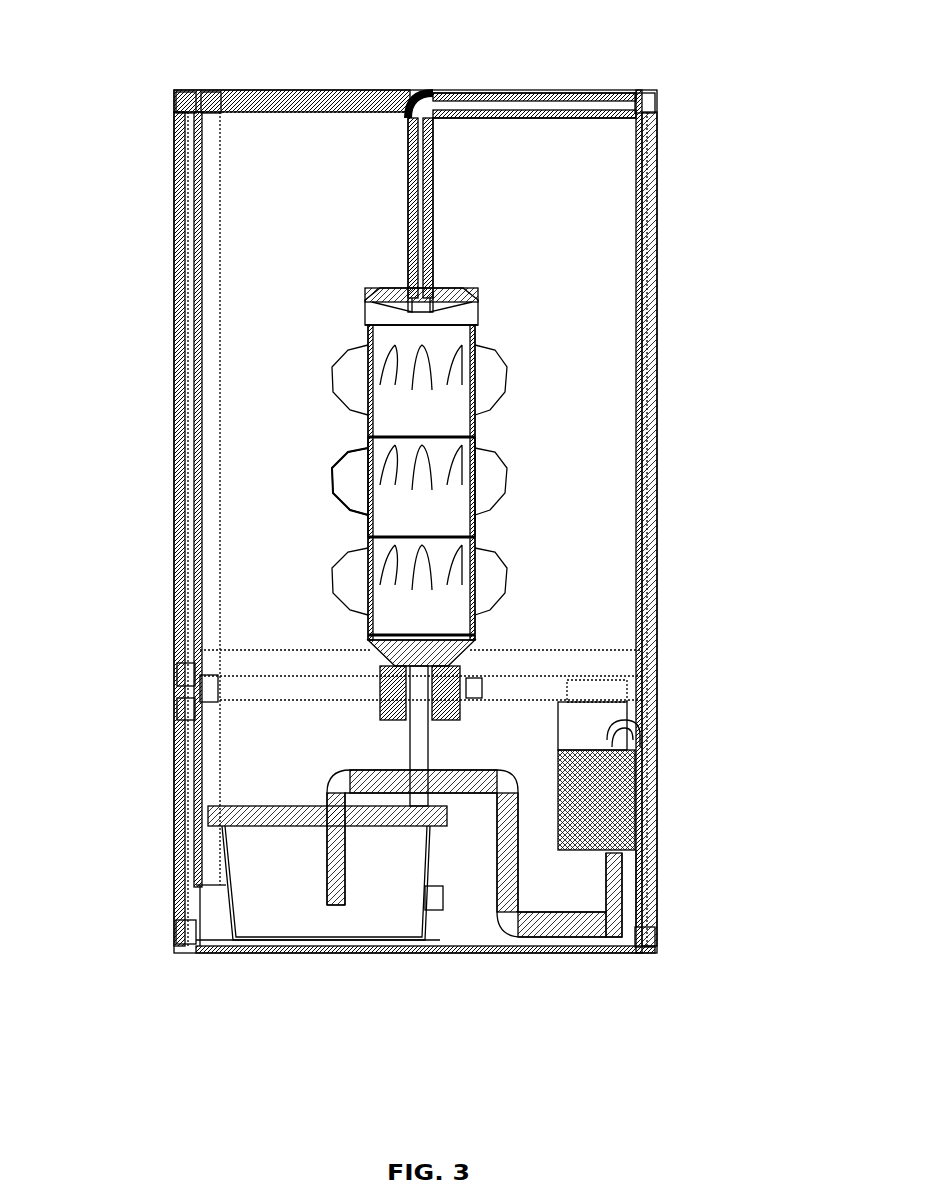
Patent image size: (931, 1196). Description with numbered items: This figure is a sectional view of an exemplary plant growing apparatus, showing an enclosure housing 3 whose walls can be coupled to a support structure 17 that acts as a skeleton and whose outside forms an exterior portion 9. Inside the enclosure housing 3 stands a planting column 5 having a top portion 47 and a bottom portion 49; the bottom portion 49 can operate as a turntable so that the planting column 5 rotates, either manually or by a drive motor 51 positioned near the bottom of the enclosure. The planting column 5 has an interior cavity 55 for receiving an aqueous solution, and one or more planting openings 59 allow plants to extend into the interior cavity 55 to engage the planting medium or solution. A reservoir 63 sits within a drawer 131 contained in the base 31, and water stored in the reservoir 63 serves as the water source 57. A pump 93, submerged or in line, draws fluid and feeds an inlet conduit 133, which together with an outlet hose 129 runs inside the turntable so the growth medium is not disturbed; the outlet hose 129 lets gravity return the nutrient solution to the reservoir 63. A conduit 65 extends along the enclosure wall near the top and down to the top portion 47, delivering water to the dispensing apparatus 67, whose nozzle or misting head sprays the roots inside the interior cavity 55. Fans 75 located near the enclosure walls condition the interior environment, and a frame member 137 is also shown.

The enclosure housing 3 is at (308, 100).
The support structure 17 is at (198, 92).
The exterior portion 9 is at (174, 272).
The drawer 131 is at (177, 450).
The conduit 65 is at (407, 150).
The dispensing apparatus 67 is at (415, 296).
The top portion 47 is at (455, 297).
The planting column 5 is at (365, 340).
The planting openings 59 is at (350, 456).
The interior cavity 55 is at (440, 418).
The bottom portion 49 is at (470, 648).
The fans 75 is at (597, 686).
The drive motor 51 is at (385, 718).
The outlet hose 129 is at (410, 742).
The reservoir 63 is at (208, 815).
The water source 57 is at (244, 920).
The base 31 is at (176, 850).
The inlet conduit 133 is at (598, 925).
The pump 93 is at (626, 812).
The frame member 137 is at (650, 882).